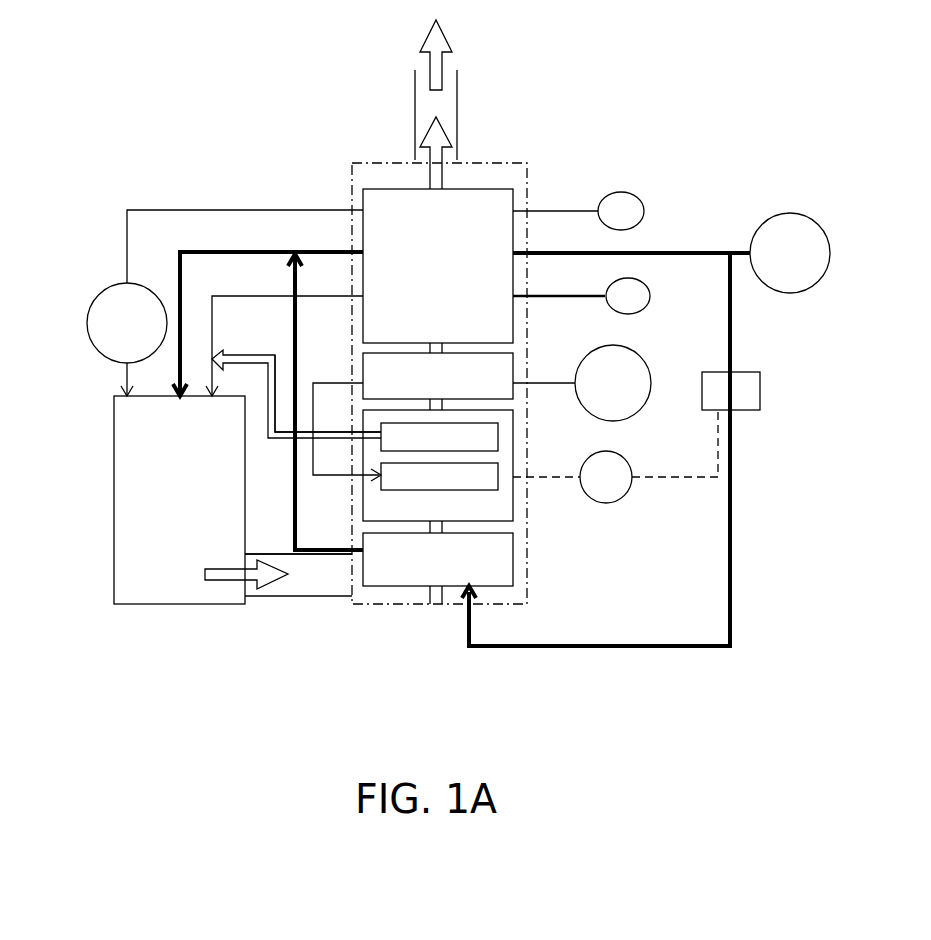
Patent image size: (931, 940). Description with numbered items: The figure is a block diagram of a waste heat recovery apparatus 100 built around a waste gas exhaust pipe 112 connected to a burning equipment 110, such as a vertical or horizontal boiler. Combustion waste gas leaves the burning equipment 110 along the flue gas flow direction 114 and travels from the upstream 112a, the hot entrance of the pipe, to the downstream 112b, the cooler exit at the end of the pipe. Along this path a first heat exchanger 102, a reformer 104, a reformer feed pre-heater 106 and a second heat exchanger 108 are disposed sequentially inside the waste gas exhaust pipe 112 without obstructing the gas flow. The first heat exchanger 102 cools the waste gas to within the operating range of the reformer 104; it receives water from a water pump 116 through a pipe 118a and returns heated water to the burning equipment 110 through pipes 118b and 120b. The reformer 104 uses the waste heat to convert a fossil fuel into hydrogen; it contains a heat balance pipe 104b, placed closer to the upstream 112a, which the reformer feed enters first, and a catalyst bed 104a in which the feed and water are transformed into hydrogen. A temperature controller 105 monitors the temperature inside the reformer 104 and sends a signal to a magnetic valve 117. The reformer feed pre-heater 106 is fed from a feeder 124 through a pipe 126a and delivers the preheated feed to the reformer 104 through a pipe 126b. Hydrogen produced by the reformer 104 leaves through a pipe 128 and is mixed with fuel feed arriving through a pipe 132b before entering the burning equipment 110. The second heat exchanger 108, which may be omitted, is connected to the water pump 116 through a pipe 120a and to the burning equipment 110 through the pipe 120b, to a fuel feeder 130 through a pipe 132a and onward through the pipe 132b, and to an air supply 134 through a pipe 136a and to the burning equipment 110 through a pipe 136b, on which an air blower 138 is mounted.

The waste heat recovery apparatus 100 is at (502, 608).
The first heat exchanger 102 is at (438, 562).
The reformer 104 is at (438, 460).
The catalyst bed 104a is at (439, 437).
The heat balance pipe 104b is at (439, 477).
The temperature controller 105 is at (615, 456).
The reformer feed pre-heater 106 is at (438, 371).
The second heat exchanger 108 is at (438, 266).
The burning equipment 110 is at (127, 483).
The waste gas exhaust pipe 112 is at (330, 590).
The upstream 112a is at (302, 579).
The downstream 112b is at (447, 102).
The flue gas flow direction 114 is at (225, 578).
The water pump 116 is at (790, 253).
The magnetic valve 117 is at (731, 391).
The pipe 118a is at (643, 648).
The pipe 118b is at (293, 335).
The pipe 120a is at (662, 250).
The pipe 120b is at (268, 250).
The feeder 124 is at (613, 383).
The pipe 126a is at (560, 382).
The pipe 126b is at (331, 380).
The pipe 128 is at (287, 438).
The fuel feeder 130 is at (628, 296).
The pipe 132a is at (538, 293).
The pipe 132b is at (272, 293).
The air supply 134 is at (621, 211).
The pipe 136a is at (555, 210).
The pipe 136b is at (240, 208).
The air blower 138 is at (127, 323).